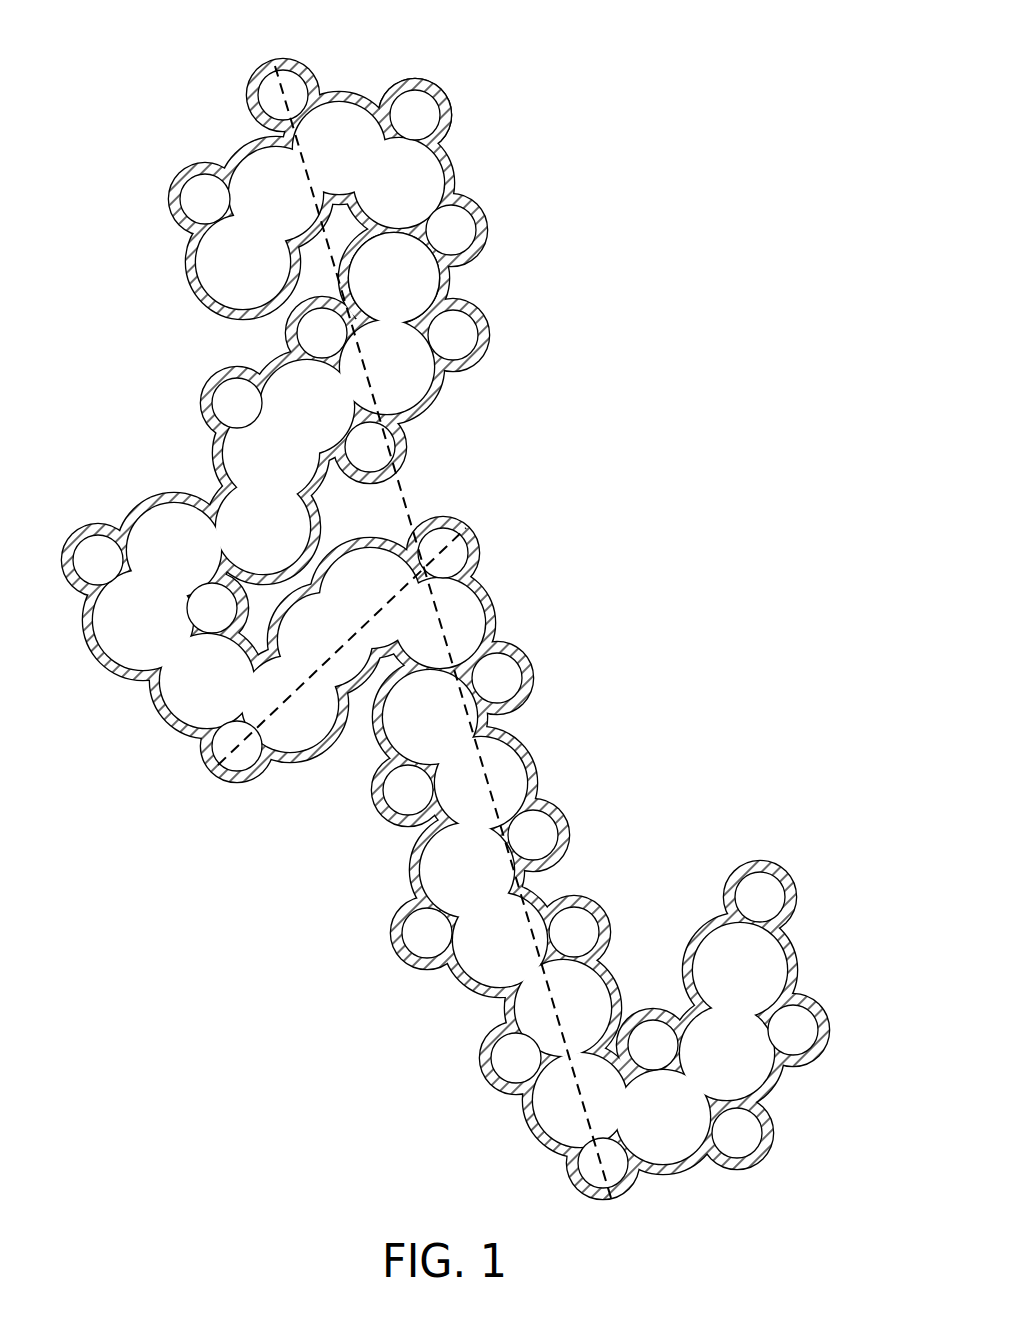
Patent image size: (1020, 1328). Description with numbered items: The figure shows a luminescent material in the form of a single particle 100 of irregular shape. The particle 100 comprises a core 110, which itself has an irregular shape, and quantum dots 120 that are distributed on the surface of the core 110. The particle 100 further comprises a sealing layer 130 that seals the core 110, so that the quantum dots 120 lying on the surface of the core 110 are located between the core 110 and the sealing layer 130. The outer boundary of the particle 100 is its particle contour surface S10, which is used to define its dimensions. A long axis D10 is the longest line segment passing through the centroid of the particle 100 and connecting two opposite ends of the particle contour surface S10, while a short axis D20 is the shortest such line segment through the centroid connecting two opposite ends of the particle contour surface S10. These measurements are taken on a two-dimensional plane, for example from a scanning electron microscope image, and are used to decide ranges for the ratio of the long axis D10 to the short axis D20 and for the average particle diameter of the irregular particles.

The particle 100 is at (100, 41).
The particle contour surface S10 is at (348, 98).
The core 110 is at (425, 285).
The quantum dots 120 is at (462, 224).
The sealing layer 130 is at (453, 112).
The long axis D10 is at (460, 624).
The short axis D20 is at (200, 742).